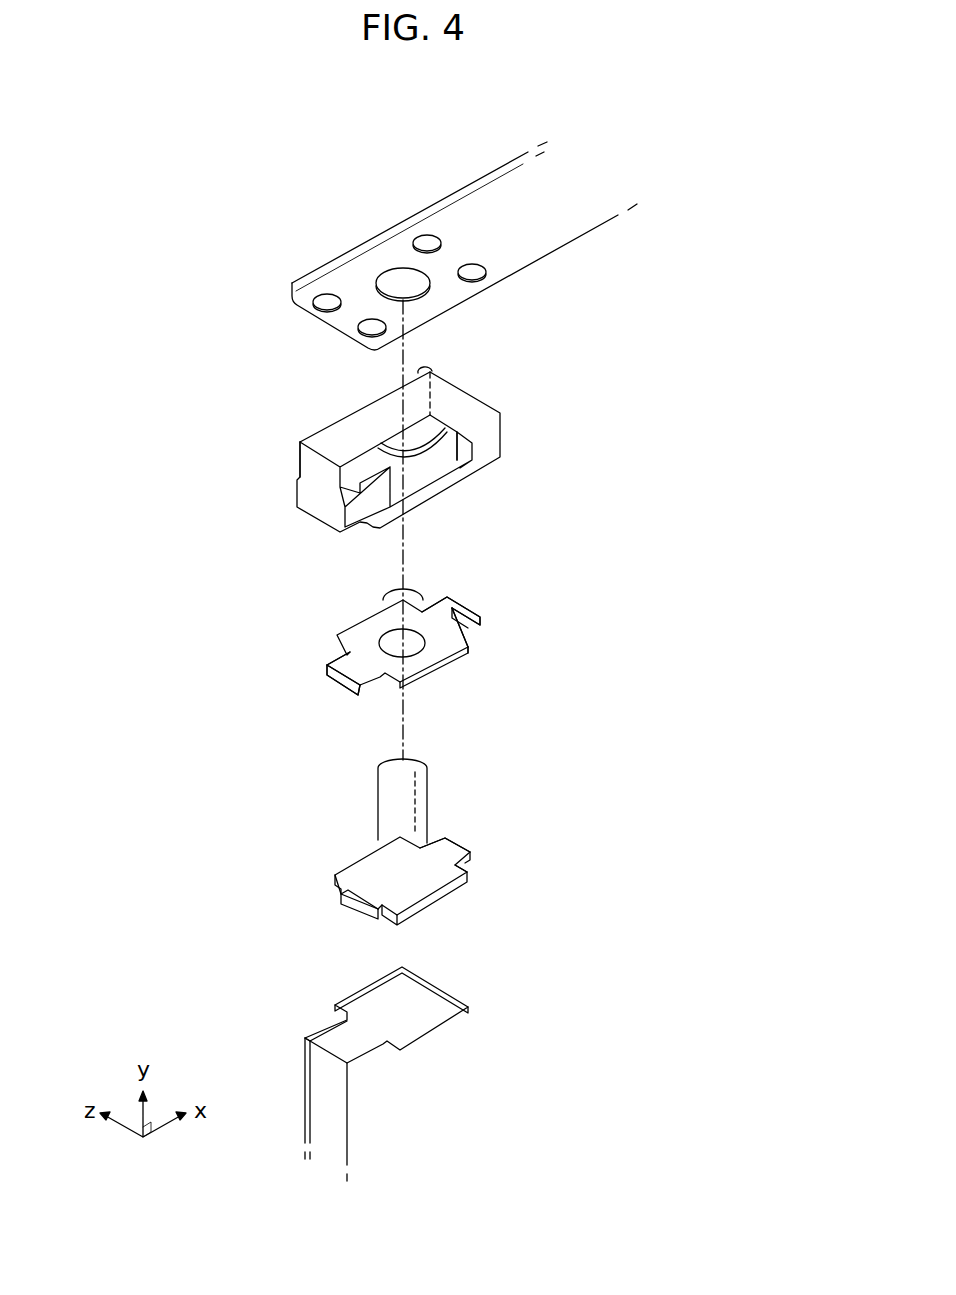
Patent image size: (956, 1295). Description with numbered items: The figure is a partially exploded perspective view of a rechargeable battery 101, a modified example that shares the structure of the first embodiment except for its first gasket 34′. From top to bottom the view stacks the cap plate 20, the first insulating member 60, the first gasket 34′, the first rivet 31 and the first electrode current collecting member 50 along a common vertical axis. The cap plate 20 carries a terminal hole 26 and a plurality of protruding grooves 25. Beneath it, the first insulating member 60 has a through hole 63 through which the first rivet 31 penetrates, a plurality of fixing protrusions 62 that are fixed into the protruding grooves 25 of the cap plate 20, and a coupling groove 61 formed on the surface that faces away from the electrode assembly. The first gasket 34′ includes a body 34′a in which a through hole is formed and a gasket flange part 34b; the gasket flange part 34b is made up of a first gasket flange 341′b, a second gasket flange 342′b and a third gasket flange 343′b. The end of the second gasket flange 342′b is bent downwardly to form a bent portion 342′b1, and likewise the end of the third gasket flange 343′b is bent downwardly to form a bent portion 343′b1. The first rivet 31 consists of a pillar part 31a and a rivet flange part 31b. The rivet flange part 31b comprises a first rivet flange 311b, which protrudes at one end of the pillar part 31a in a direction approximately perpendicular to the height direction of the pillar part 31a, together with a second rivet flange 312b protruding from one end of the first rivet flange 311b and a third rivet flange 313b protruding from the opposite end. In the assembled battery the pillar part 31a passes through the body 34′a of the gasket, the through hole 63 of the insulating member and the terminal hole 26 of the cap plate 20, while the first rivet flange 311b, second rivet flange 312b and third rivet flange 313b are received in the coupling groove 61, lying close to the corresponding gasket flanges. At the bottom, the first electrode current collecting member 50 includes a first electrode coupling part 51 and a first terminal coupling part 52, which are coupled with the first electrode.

The rechargeable battery 101 is at (173, 219).
The cap plate 20 is at (432, 246).
The protruding grooves 25 is at (323, 305).
The terminal hole 26 is at (396, 272).
The first insulating member 60 is at (397, 442).
The coupling groove 61 is at (440, 476).
The fixing protrusions 62 is at (322, 428).
The through hole 63 is at (402, 436).
The first gasket 34′ is at (335, 648).
The body 34′a is at (380, 597).
The gasket flange part 34b is at (304, 676).
The first gasket flange 341′b is at (347, 627).
The second gasket flange 342′b is at (340, 652).
The bent portion of the second gasket flange 342′b1 is at (342, 668).
The third gasket flange 343′b is at (442, 618).
The bent portion of the third gasket flange 343′b1 is at (456, 632).
The first rivet 31 is at (427, 852).
The pillar part 31a is at (393, 803).
The rivet flange part 31b is at (482, 883).
The first rivet flange 311b is at (468, 868).
The second rivet flange 312b is at (358, 910).
The third rivet flange 313b is at (463, 842).
The first electrode current collecting member 50 is at (426, 1074).
The first electrode coupling part 51 is at (422, 1018).
The first terminal coupling part 52 is at (337, 1105).